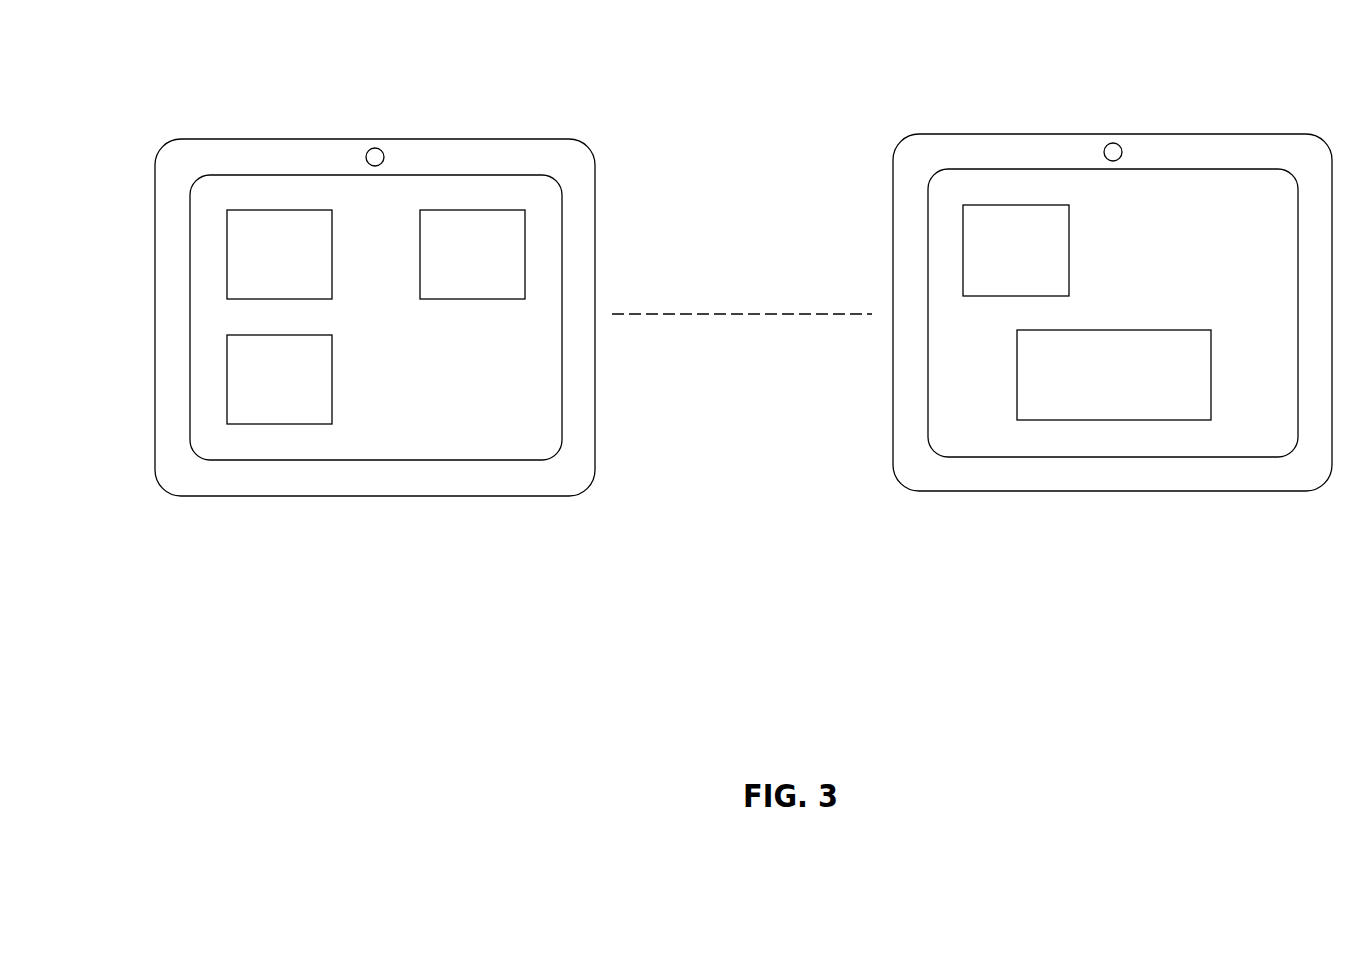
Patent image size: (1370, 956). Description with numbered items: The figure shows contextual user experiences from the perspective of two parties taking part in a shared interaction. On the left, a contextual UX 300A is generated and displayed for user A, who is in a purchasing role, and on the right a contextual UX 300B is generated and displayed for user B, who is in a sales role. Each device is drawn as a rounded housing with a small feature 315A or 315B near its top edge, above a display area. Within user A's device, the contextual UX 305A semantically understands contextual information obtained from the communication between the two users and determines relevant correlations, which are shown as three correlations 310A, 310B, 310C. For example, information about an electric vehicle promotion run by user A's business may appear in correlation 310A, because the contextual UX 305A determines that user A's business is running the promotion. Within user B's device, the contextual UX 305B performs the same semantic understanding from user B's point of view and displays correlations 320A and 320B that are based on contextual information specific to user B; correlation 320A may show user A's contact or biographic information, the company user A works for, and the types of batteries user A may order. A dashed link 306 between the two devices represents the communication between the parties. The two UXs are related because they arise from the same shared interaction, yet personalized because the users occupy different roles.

The contextual UX 300A is at (208, 140).
The contextual UX 305A is at (376, 317).
The correlation 310A is at (279, 254).
The correlation 310B is at (279, 379).
The correlation 310C is at (472, 254).
The camera of first mobile device 315A is at (383, 140).
The communication link 306 is at (735, 335).
The contextual UX 300B is at (963, 130).
The contextual UX 305B is at (1113, 313).
The correlation 320A is at (1016, 250).
The correlation 320B is at (1114, 375).
The camera of second mobile device 315B is at (1110, 132).